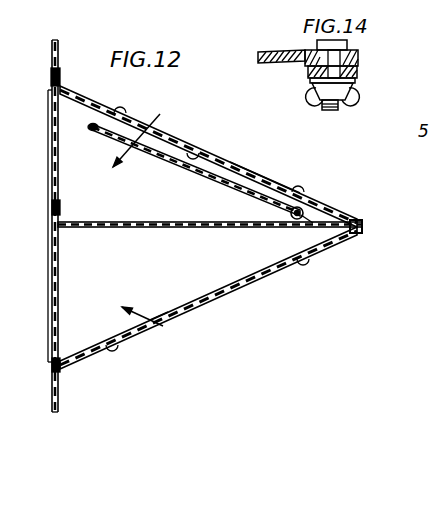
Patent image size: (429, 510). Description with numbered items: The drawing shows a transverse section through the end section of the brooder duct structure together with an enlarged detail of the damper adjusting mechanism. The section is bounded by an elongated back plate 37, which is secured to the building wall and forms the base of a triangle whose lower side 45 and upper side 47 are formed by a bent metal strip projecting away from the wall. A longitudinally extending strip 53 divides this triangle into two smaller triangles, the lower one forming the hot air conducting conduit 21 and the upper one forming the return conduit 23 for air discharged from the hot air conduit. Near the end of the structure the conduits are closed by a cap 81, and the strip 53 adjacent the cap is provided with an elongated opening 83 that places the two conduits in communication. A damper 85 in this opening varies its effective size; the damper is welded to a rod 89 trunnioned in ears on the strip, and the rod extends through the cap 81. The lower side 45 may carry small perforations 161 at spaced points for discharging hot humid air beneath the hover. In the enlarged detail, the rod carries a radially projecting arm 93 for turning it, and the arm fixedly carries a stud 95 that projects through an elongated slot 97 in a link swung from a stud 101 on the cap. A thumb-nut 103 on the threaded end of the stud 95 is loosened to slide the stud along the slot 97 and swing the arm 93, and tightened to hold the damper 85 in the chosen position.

In FIG. 12, the back plate 37 is at (62, 59).
In FIG. 12, the upper side 47 is at (198, 148).
In FIG. 12, the cap 81 is at (254, 173).
In FIG. 12, the damper 85 is at (221, 189).
In FIG. 12, the rod 89 is at (303, 209).
In FIG. 12, the return conduit 23 is at (146, 134).
In FIG. 12, the opening 83 is at (140, 228).
In FIG. 12, the strip 53 is at (320, 235).
In FIG. 12, the lower side 45 is at (211, 291).
In FIG. 12, the hot air conducting conduit 21 is at (164, 324).
In FIG. 12, the perforations 161 is at (158, 323).
In FIG. 14, the arm 93 is at (275, 52).
In FIG. 14, the stud 95 is at (357, 63).
In FIG. 14, the stud 101 is at (357, 70).
In FIG. 14, the slot 97 is at (355, 80).
In FIG. 14, the thumb-nut 103 is at (365, 104).